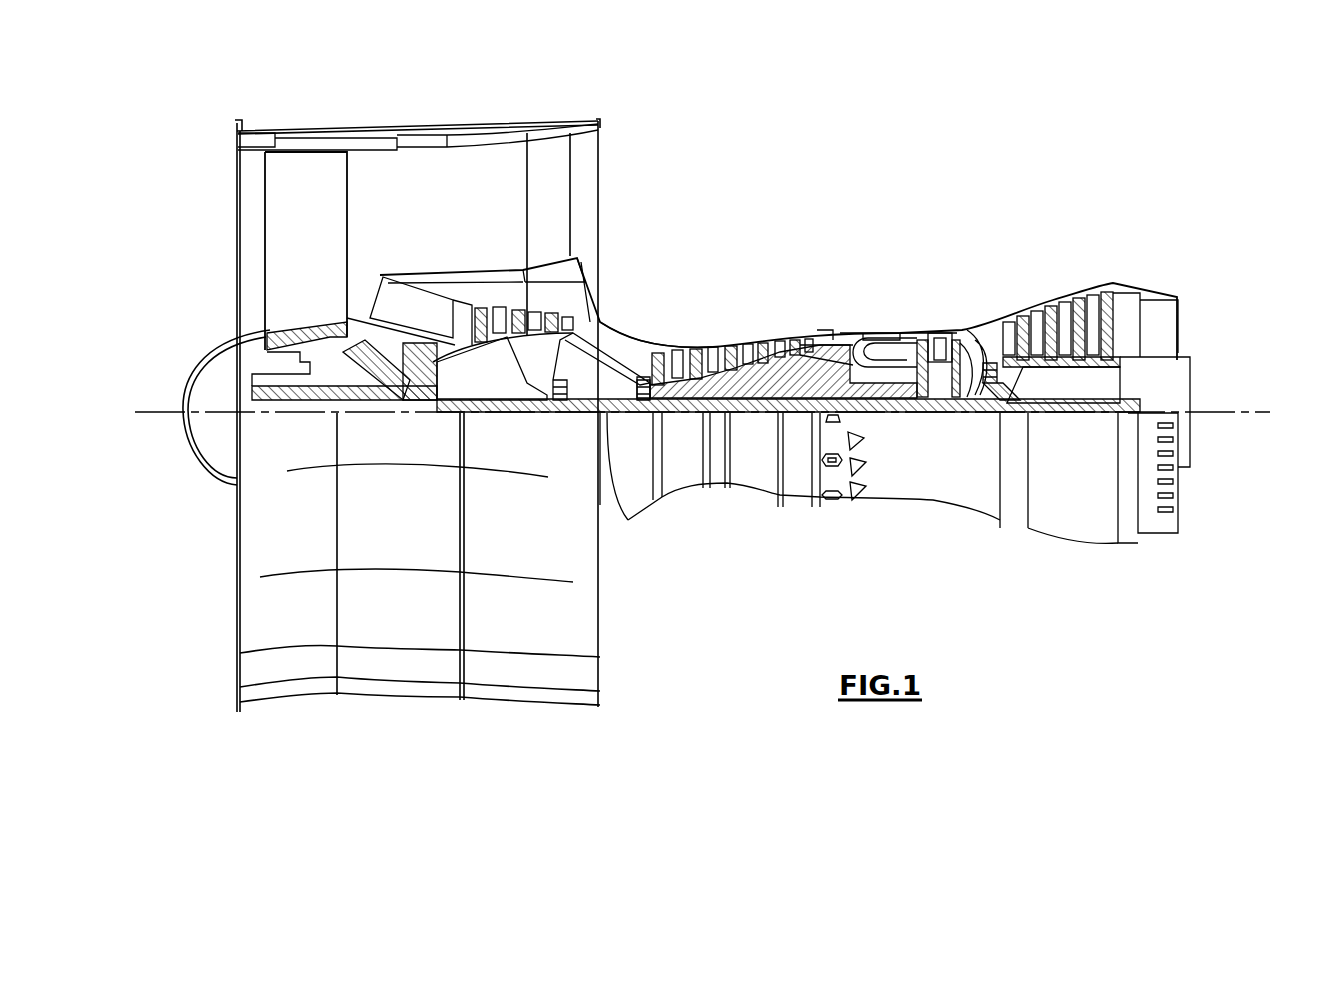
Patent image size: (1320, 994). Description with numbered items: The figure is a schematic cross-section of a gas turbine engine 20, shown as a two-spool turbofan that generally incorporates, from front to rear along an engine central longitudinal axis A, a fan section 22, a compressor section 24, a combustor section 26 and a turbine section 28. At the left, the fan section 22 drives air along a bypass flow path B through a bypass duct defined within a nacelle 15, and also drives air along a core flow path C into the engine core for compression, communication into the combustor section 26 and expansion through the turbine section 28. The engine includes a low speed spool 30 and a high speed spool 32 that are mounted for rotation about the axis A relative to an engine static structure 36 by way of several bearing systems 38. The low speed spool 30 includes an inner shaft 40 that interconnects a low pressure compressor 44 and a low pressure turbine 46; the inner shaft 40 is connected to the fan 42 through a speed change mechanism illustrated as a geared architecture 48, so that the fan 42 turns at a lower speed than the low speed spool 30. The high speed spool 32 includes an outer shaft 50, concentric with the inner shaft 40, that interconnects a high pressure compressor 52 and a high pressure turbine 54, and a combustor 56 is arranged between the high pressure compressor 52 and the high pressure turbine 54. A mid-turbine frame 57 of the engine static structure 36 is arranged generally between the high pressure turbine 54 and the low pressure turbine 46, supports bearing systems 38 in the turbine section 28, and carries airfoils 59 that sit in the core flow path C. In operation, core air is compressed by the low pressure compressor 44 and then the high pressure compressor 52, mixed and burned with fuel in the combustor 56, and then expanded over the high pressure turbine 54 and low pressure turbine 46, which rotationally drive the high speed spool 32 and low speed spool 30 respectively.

The nacelle 15 is at (420, 130).
The gas turbine engine 20 is at (878, 178).
The fan section 22 is at (391, 382).
The compressor section 24 is at (648, 318).
The combustor section 26 is at (898, 308).
The turbine section 28 is at (1047, 305).
The low speed spool 30 is at (755, 420).
The high speed spool 32 is at (800, 352).
The engine static structure 36 is at (796, 500).
The bearing systems 38 is at (555, 398).
The inner shaft 40 is at (625, 460).
The fan 42 is at (319, 257).
The low pressure compressor 44 is at (540, 318).
The low pressure turbine 46 is at (1063, 300).
The geared architecture 48 is at (425, 398).
The outer shaft 50 is at (882, 400).
The high pressure compressor 52 is at (730, 370).
The high pressure turbine 54 is at (938, 342).
The combustor 56 is at (873, 353).
The mid-turbine frame 57 is at (975, 318).
The airfoils 59 is at (975, 347).
The engine central longitudinal axis A is at (1268, 412).
The bypass flow path B is at (387, 202).
The core flow path C is at (426, 310).